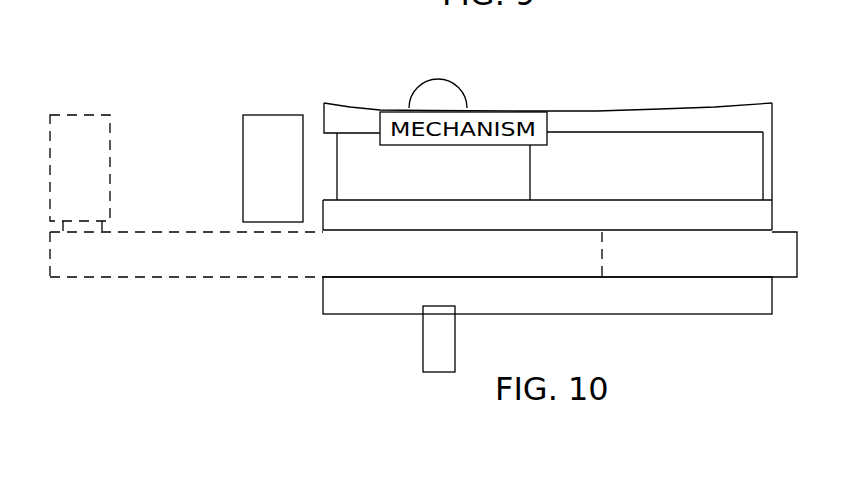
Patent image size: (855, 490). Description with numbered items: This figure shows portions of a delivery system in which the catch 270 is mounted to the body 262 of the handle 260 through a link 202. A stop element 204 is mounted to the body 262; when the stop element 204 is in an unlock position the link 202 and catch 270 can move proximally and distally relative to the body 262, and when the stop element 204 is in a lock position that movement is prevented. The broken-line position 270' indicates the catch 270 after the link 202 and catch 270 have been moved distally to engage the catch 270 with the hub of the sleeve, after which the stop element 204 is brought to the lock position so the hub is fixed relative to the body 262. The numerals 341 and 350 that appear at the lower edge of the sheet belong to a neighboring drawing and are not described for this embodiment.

The catch in distally moved position 270' is at (96, 120).
The catch 270 is at (280, 119).
The body 262 is at (596, 114).
The handle 260 is at (673, 108).
The link 202 is at (647, 250).
The stop element 204 is at (442, 337).
The element of adjacent figure 341 is at (288, 489).
The element of adjacent figure 350 is at (658, 489).